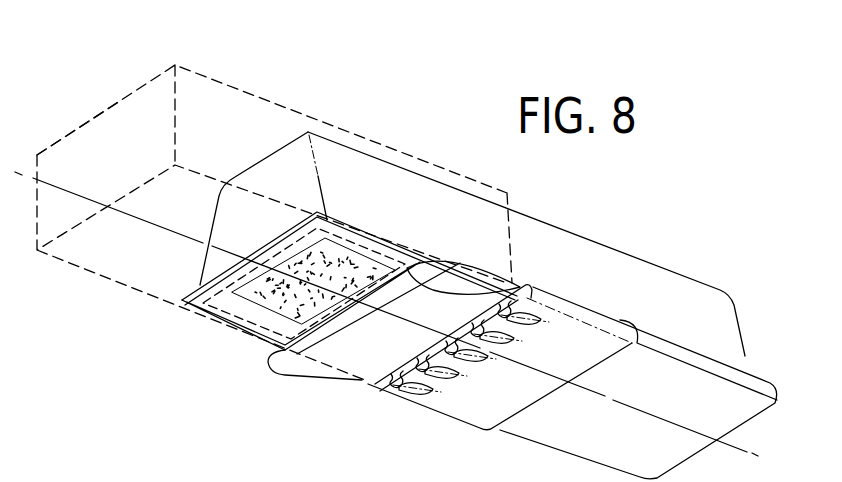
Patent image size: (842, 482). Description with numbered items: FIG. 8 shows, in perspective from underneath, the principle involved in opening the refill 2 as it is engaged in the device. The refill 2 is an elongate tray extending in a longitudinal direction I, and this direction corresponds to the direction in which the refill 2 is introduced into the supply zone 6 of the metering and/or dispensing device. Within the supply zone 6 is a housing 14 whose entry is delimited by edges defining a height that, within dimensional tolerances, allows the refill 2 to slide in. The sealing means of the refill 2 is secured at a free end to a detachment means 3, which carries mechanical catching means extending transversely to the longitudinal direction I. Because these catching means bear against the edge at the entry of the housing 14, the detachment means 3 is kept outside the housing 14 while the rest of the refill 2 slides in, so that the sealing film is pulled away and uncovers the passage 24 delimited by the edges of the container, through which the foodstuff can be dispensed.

The refill 2 is at (612, 230).
The detachment means 3 is at (583, 346).
The supply zone 6 is at (233, 86).
The housing 14 is at (247, 133).
The passage 24 is at (290, 301).
The longitudinal direction I is at (68, 190).